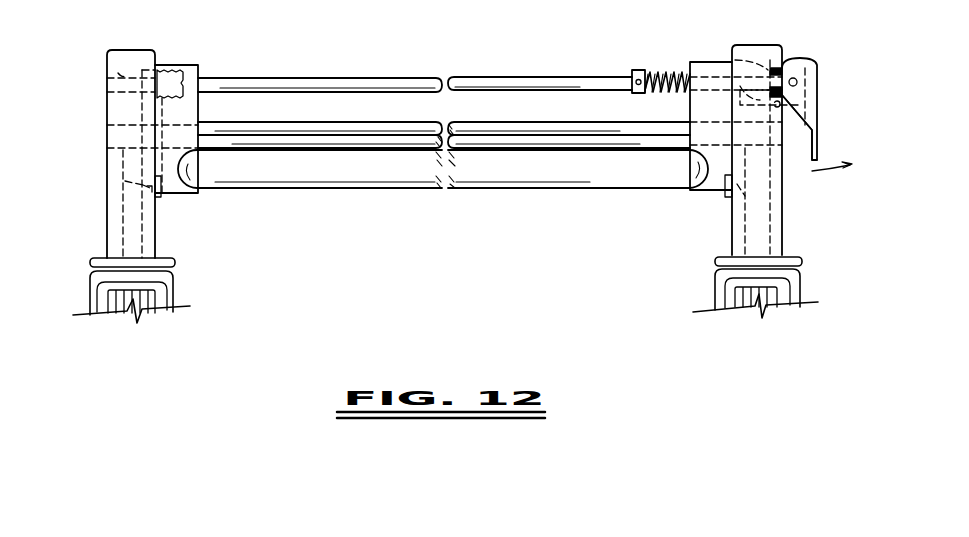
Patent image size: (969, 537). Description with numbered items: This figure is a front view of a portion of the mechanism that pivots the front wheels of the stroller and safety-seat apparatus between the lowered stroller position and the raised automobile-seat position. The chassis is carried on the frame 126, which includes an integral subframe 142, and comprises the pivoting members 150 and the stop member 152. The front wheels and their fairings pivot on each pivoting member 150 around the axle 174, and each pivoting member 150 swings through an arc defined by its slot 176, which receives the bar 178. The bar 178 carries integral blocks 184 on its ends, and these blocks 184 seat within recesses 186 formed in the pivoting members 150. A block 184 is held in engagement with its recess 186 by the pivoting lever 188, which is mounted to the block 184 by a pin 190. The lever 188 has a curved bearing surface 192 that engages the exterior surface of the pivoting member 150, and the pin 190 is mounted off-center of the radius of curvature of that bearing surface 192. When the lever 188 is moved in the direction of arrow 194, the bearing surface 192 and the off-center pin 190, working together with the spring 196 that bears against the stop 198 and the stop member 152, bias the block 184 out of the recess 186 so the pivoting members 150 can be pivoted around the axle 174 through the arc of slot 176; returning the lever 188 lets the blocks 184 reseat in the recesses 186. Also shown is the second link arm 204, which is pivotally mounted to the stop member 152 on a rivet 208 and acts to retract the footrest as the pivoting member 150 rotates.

The frame 126 is at (386, 190).
The subframe 142 is at (283, 176).
The pivoting member 150 is at (107, 228).
The stop member 152 is at (713, 62).
The axle 174 is at (540, 123).
The slot 176 is at (112, 72).
The bar 178 is at (557, 78).
The block 184 is at (140, 73).
The recess 186 is at (184, 70).
The pivoting lever 188 is at (818, 125).
The pin 190 is at (797, 80).
The curved bearing surface 192 is at (797, 58).
The arrow 194 is at (853, 165).
The spring 196 is at (668, 93).
The stop 198 is at (640, 70).
The second link arm 204 is at (160, 197).
The rivet 208 is at (125, 181).